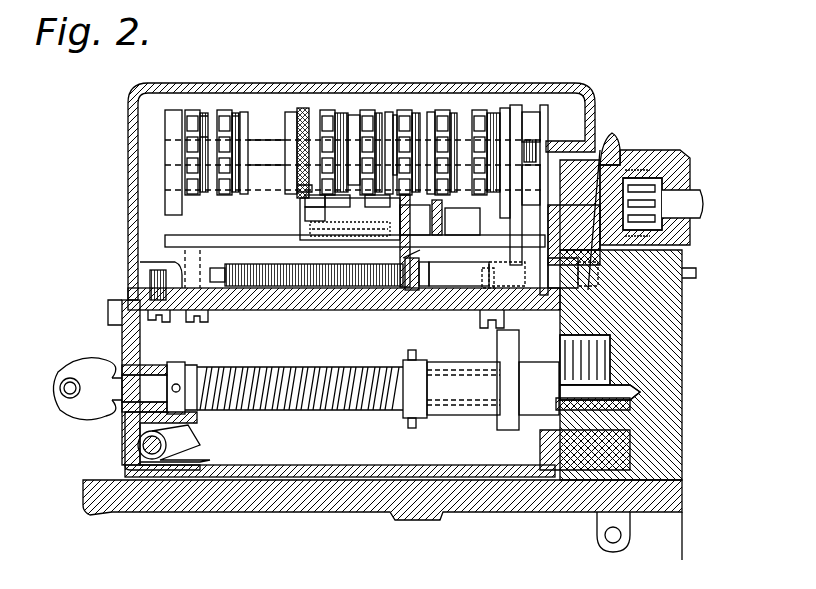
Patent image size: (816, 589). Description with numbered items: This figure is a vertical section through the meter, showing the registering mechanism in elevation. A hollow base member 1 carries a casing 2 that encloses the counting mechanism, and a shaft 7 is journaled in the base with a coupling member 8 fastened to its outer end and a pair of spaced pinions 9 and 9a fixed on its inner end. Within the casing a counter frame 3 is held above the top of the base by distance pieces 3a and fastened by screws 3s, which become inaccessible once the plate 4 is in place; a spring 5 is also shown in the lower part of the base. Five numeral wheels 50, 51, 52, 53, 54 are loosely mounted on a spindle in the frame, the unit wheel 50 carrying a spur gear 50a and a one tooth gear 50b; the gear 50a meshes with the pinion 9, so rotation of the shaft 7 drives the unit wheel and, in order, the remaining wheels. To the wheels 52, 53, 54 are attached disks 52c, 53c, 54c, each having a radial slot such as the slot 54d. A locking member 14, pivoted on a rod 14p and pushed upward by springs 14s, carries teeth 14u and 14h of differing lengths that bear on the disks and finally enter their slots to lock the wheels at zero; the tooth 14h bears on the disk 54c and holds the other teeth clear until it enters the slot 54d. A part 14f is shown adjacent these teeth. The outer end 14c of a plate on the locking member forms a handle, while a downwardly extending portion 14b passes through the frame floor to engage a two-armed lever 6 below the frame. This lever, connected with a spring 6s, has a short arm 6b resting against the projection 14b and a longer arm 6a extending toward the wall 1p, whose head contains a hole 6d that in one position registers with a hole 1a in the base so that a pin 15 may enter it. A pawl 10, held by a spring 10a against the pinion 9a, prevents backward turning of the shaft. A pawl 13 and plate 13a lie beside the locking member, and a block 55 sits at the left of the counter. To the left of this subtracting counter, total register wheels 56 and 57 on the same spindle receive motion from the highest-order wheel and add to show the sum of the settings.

The hollow base member 1 is at (122, 298).
The hole in inner wall of base 1a is at (655, 282).
The wall of the casing 1p is at (612, 135).
The casing 2 is at (128, 155).
The counter frame 3 is at (285, 286).
The distance pieces 3a is at (150, 268).
The screws 3s is at (208, 318).
The plate 4 is at (340, 476).
The spring 5 is at (185, 430).
The two-armed lever 6 is at (448, 286).
The longer arm of lever 6a is at (560, 260).
The short arm of lever 6b is at (416, 288).
The hole in lever head 6d is at (574, 232).
The spring 6s is at (340, 286).
The shaft 7 is at (596, 205).
The coupling member 8 is at (610, 178).
The pinion 9 is at (524, 198).
The pinion 9a is at (538, 150).
The pawl 10 is at (525, 118).
The spring 10a is at (535, 135).
The pawl 13 is at (478, 236).
The pawl plate 13a is at (438, 235).
The locking member 14 is at (318, 232).
The downwardly extending portion 14b is at (402, 262).
The outer end of plate 14c is at (404, 236).
The carriage flange 14f is at (339, 205).
The tooth 14u is at (380, 205).
The tooth 14h is at (305, 200).
The rod 14p is at (305, 214).
The springs 14s is at (350, 239).
The pin 15 is at (686, 273).
The unit wheel 50 is at (478, 110).
The spur gear 50a is at (200, 112).
The one tooth gear 50b is at (228, 110).
The tens wheel 51 is at (443, 110).
The hundreds wheel 52 is at (405, 110).
The disk 52c is at (395, 128).
The tens of dollars wheel 53 is at (366, 110).
The disk 53c is at (354, 128).
The hundreds of dollars wheel 54 is at (325, 112).
The disk 54c is at (300, 125).
The slot 54d is at (298, 150).
The block 55 is at (298, 180).
The total register numeral wheel 56 is at (224, 196).
The total register numeral wheel 57 is at (194, 196).